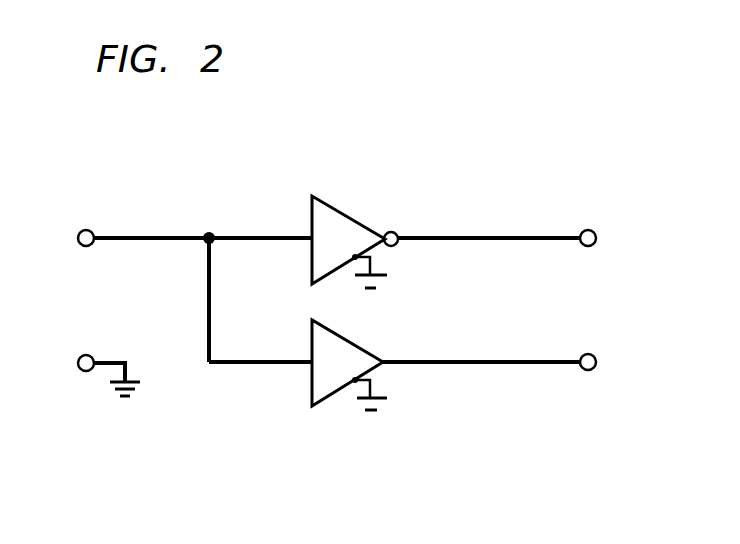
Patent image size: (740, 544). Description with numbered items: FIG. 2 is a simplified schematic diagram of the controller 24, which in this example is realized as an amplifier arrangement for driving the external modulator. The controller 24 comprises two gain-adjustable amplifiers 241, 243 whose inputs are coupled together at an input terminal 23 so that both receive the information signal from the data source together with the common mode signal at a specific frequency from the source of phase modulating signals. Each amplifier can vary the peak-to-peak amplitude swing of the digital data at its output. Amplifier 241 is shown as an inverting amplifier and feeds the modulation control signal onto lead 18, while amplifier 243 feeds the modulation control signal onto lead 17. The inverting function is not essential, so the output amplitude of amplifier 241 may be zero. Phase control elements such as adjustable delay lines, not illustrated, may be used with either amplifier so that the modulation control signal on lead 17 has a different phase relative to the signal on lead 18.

The controller 24 is at (230, 146).
The input terminal 23 is at (112, 234).
The gain-adjustable amplifier 241 is at (357, 218).
The gain-adjustable amplifier 243 is at (357, 341).
The lead 18 is at (577, 232).
The lead 17 is at (577, 370).